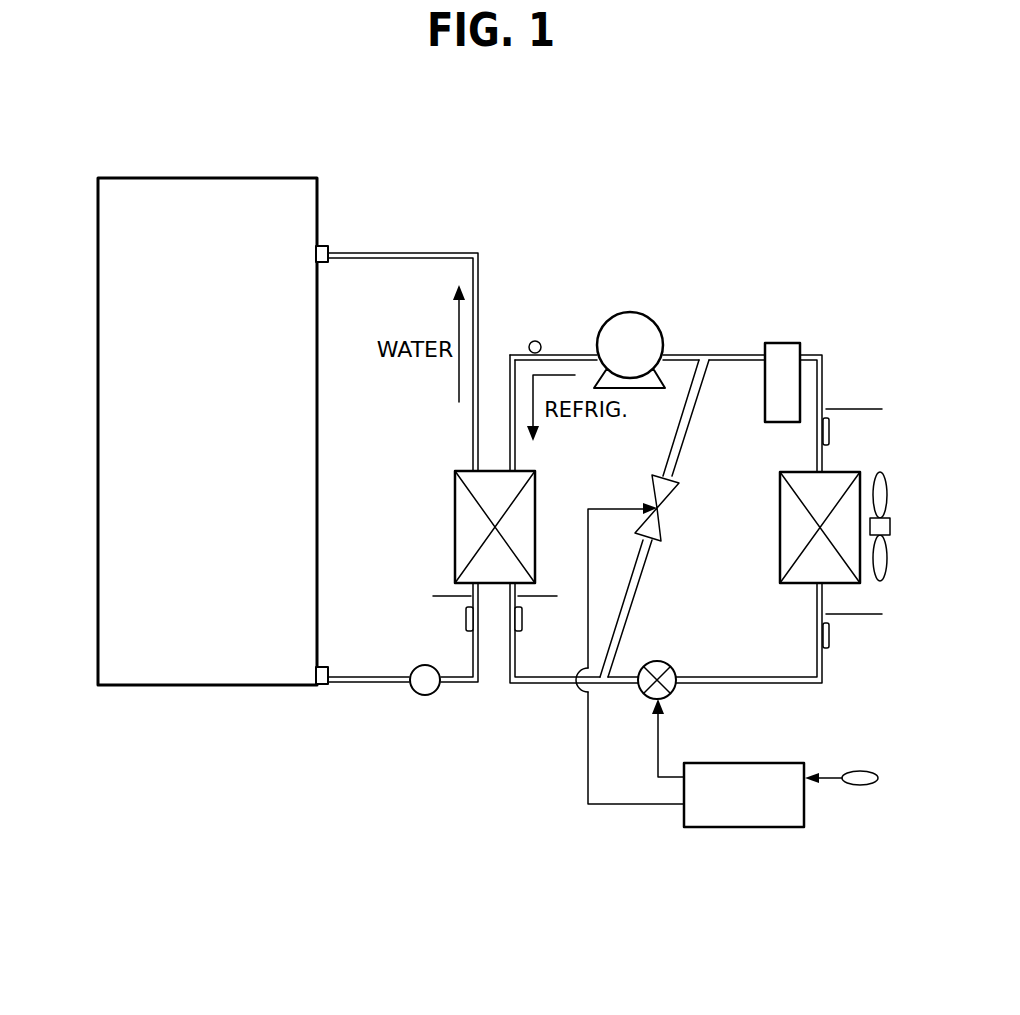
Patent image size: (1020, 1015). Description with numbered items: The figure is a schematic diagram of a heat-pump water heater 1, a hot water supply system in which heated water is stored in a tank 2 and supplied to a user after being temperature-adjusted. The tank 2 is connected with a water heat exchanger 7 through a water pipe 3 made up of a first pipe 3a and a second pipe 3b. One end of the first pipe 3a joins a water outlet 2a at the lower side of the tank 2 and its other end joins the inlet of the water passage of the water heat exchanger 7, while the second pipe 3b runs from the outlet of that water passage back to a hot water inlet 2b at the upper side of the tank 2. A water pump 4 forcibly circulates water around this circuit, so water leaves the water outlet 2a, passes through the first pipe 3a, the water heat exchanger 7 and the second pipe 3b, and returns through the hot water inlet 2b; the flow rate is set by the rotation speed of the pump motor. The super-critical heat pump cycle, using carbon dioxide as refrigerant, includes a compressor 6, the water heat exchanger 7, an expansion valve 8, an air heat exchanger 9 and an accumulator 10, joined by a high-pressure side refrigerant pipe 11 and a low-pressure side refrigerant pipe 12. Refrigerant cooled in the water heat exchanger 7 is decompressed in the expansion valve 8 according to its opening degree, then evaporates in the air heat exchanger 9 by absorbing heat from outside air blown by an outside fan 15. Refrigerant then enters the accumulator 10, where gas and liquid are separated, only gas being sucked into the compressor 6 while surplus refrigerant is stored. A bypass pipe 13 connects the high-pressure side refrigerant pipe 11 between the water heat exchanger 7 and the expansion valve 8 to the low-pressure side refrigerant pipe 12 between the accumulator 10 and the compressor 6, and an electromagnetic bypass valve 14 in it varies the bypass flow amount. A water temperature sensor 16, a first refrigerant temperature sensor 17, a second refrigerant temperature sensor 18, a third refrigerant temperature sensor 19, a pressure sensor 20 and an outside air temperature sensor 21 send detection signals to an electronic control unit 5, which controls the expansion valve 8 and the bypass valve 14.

The heat-pump water heater 1 is at (577, 210).
The tank 2 is at (97, 222).
The water outlet 2a is at (321, 686).
The hot water inlet 2b is at (328, 245).
The water pipe 3 is at (403, 471).
The first pipe 3a is at (347, 686).
The second pipe 3b is at (405, 253).
The water pump 4 is at (431, 696).
The electronic control unit 5 is at (760, 829).
The compressor 6 is at (649, 338).
The water heat exchanger 7 is at (524, 533).
The expansion valve 8 is at (669, 670).
The air heat exchanger 9 is at (797, 580).
The accumulator 10 is at (787, 343).
The high-pressure side refrigerant pipe 11 is at (545, 687).
The low-pressure side refrigerant pipe 12 is at (735, 353).
The bypass pipe 13 is at (640, 585).
The bypass valve 14 is at (666, 513).
The outside fan 15 is at (886, 566).
The water temperature sensor 16 is at (466, 620).
The first refrigerant temperature sensor 17 is at (523, 623).
The second refrigerant temperature sensor 18 is at (830, 636).
The third refrigerant temperature sensor 19 is at (830, 431).
The pressure sensor 20 is at (535, 341).
The outside air temperature sensor 21 is at (862, 786).